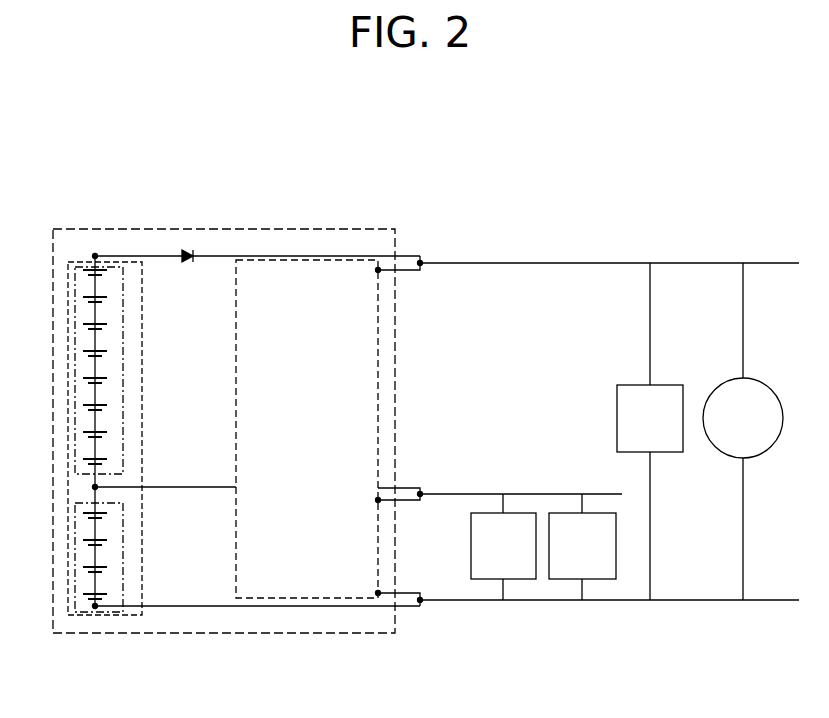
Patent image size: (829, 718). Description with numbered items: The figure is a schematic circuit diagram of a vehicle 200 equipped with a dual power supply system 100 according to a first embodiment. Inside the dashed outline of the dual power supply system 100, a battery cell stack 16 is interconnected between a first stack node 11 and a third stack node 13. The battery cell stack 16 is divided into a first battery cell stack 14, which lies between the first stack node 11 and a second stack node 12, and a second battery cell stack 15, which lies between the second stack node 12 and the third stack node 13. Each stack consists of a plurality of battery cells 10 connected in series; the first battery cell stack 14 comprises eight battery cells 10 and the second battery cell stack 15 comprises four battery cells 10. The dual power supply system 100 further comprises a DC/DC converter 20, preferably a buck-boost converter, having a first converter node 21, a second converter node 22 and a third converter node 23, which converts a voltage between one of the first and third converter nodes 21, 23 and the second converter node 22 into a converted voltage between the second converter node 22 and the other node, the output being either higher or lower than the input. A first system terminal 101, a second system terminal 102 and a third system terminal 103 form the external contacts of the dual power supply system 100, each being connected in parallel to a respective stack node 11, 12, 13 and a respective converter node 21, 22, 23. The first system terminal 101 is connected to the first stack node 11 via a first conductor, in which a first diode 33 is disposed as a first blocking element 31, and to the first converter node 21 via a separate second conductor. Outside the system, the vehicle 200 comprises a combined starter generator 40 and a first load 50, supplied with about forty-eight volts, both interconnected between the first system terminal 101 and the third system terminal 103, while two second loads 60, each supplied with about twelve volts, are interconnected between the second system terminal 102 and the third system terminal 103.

The battery cell 10 is at (85, 353).
The first stack node 11 is at (95, 255).
The second stack node 12 is at (93, 487).
The third stack node 13 is at (95, 607).
The first battery cell stack 14 is at (123, 310).
The second battery cell stack 15 is at (123, 549).
The battery cell stack 16 is at (142, 425).
The DC/DC converter 20 is at (236, 350).
The first converter node 21 is at (380, 268).
The second converter node 22 is at (380, 501).
The third converter node 23 is at (377, 596).
The first blocking element 31 is at (187, 250).
The first diode 33 is at (187, 256).
The combined starter generator 40 is at (763, 385).
The first load 50 is at (617, 418).
The second load 60 is at (520, 580).
The dual power supply system 100 is at (317, 229).
The first system terminal 101 is at (421, 262).
The second system terminal 102 is at (421, 493).
The third system terminal 103 is at (421, 602).
The vehicle 200 is at (627, 193).